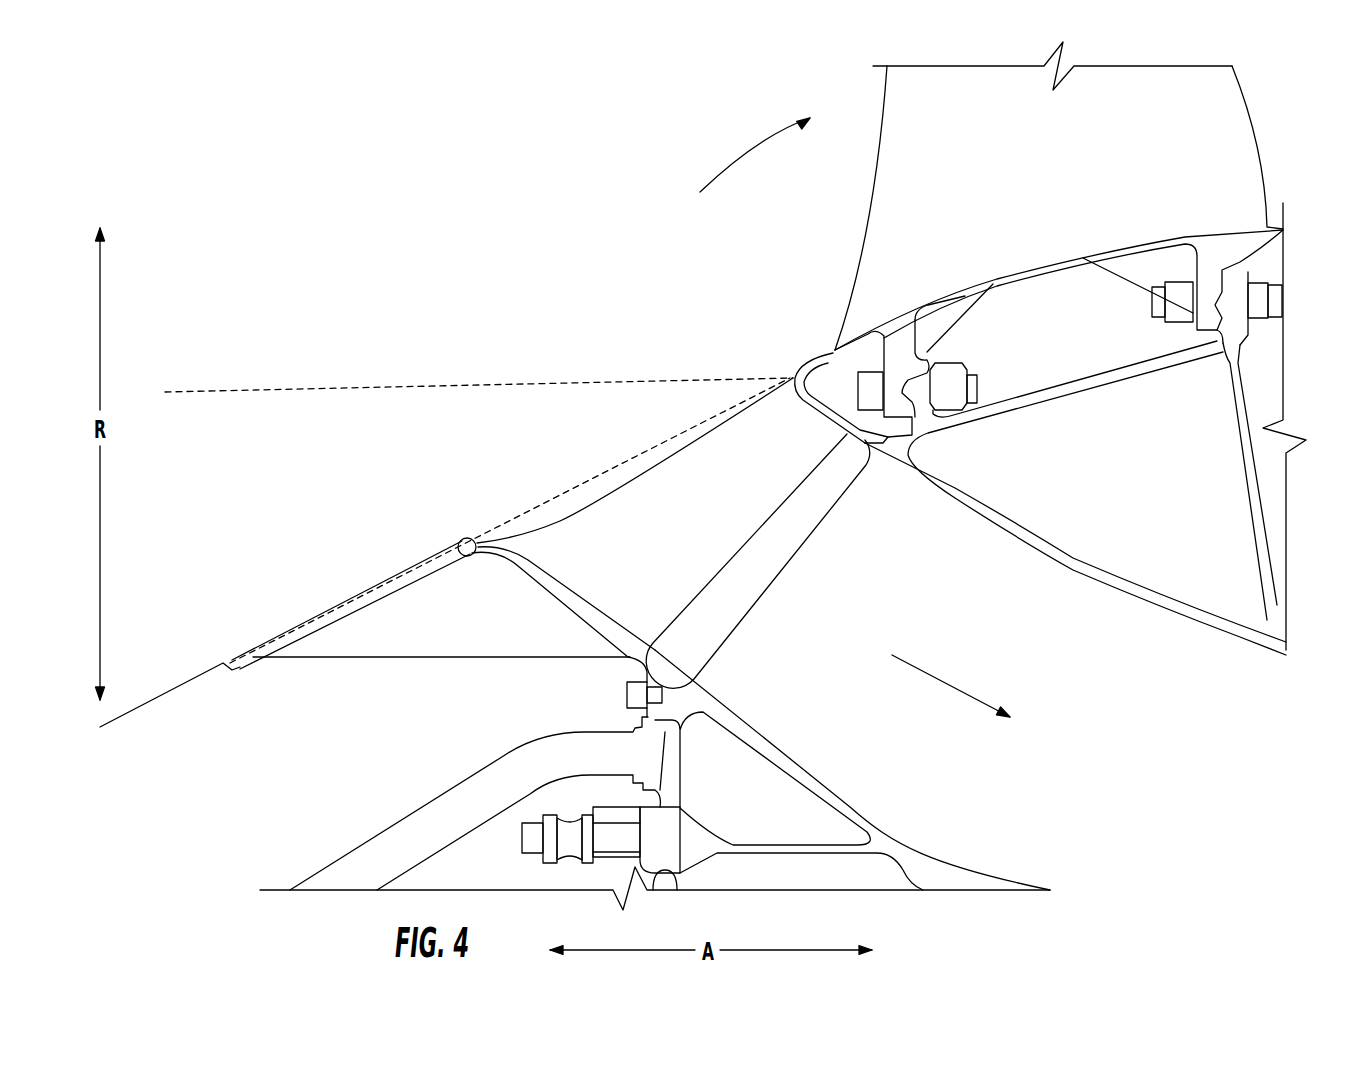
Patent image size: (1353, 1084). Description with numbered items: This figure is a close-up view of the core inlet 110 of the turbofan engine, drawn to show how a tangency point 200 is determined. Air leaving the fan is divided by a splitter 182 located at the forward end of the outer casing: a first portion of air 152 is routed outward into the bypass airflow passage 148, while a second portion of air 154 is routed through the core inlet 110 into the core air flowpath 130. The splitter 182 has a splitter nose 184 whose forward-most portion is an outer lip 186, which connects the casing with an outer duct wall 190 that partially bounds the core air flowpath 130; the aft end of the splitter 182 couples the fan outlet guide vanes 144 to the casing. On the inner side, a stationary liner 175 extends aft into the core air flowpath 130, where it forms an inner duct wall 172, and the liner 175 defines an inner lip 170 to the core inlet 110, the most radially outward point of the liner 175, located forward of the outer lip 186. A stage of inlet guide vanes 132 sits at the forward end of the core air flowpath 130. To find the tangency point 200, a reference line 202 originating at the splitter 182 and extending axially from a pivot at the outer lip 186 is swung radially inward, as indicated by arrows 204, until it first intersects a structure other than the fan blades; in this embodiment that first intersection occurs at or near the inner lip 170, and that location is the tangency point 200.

The core inlet 110 is at (650, 353).
The core air flowpath 130 is at (1130, 640).
The inlet guide vanes 132 is at (770, 575).
The fan outlet guide vanes 144 is at (1103, 189).
The bypass airflow passage 148 is at (1275, 116).
The first portion of air 152 is at (750, 140).
The second portion of air 154 is at (920, 673).
The inner lip 170 is at (488, 555).
The inner duct wall 172 is at (853, 810).
The liner 175 is at (148, 703).
The splitter 182 is at (898, 273).
The splitter nose 184 is at (810, 337).
The outer lip 186 is at (783, 368).
The outer duct wall 190 is at (1023, 543).
The tangency point 200 is at (460, 541).
The reference line 202 is at (283, 390).
The arrows 204 is at (417, 388).